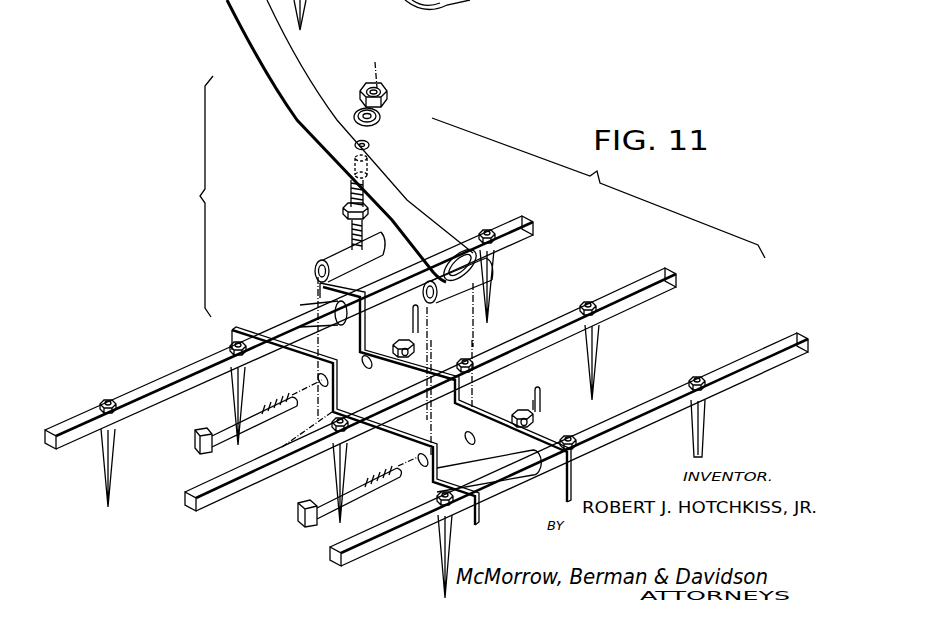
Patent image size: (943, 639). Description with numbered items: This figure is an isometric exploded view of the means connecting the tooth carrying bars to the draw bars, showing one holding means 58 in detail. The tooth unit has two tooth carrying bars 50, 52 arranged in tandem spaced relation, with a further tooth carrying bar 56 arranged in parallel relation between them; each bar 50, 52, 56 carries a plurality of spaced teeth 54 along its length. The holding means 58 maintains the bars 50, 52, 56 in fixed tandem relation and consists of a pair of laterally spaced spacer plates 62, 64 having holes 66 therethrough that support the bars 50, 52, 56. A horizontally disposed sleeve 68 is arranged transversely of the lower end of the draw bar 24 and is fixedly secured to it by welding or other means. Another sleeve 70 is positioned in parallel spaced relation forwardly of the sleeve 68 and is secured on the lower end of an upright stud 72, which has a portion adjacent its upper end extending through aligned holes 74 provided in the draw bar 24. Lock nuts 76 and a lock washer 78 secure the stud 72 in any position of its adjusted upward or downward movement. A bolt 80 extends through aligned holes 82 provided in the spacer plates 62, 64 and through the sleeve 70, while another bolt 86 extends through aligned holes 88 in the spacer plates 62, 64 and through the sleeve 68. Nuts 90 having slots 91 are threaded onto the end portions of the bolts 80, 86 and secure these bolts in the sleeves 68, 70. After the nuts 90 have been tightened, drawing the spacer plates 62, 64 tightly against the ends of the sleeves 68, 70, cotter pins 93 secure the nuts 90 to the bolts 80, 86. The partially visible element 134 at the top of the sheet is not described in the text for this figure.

The draw bar 24 is at (412, 179).
The tooth carrying bar 50 is at (146, 392).
The tooth carrying bar 52 is at (398, 535).
The teeth 54 is at (335, 463).
The tooth carrying bar 56 is at (240, 488).
The holding means 58 is at (299, 284).
The spacer plate 62 is at (260, 312).
The spacer plate 64 is at (534, 436).
The holes 66 is at (533, 485).
The sleeve 68 is at (476, 272).
The sleeve 70 is at (345, 251).
The upright stud 72 is at (380, 212).
The aligned holes 74 is at (369, 146).
The lock nuts 76 is at (387, 95).
The lock washer 78 is at (381, 120).
The bolt 80 is at (227, 427).
The aligned holes 82 is at (323, 378).
The bolt 86 is at (316, 523).
The aligned holes 88 is at (417, 460).
The nuts 90 is at (397, 347).
The slots 91 is at (534, 408).
The cotter pins 93 is at (418, 320).
The wheel hub 134 is at (465, 6).